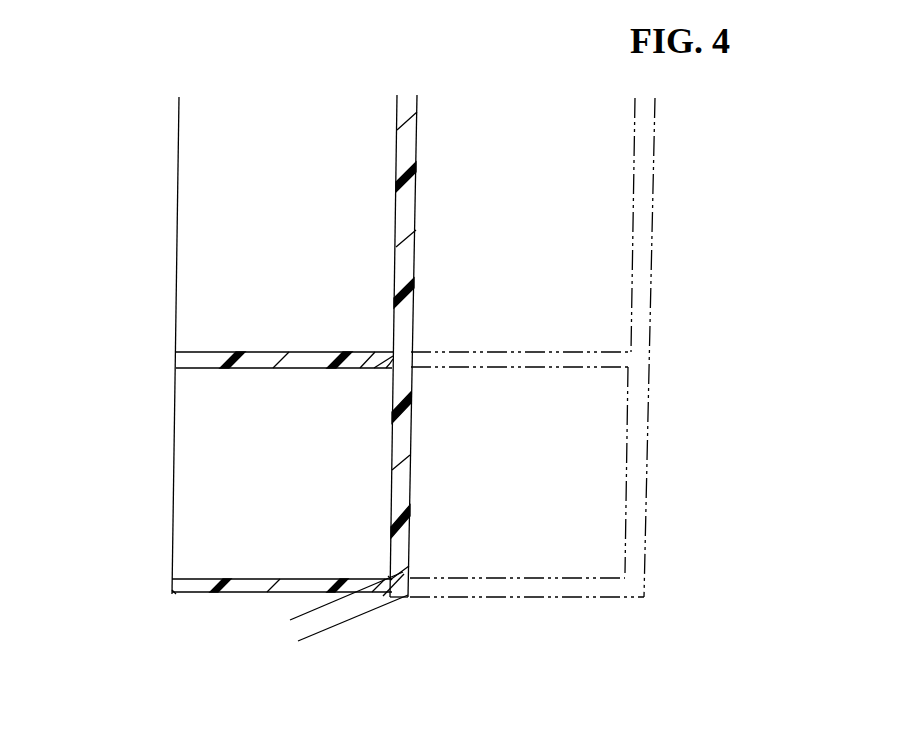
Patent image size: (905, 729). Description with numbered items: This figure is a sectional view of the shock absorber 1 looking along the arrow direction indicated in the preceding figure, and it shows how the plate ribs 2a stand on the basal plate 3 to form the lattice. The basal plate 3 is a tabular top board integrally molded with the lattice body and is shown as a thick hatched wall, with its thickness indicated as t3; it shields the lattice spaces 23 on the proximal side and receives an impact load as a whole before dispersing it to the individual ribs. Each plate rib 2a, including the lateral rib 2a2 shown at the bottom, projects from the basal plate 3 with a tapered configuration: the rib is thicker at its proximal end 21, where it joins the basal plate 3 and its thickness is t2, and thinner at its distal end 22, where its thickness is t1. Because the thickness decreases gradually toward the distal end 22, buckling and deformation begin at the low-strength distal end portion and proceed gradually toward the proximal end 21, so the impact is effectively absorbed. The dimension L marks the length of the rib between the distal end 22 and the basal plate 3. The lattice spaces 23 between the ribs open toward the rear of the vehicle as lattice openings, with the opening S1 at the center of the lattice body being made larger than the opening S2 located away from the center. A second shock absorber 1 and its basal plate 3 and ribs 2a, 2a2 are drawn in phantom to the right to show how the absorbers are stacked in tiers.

The shock absorber 1 is at (393, 133).
The plate rib 2a is at (237, 370).
The lateral rib 2a2 is at (238, 595).
The basal plate 3 is at (412, 421).
The proximal end 21 is at (388, 574).
The distal end 22 is at (390, 358).
The lattice space 23 is at (361, 345).
The lattice opening S1 is at (212, 186).
The lattice opening S2 is at (192, 471).
The rib length L is at (394, 307).
The thickness of distal end t1 is at (172, 592).
The thickness of proximal end t2 is at (322, 657).
The wall thickness t3 is at (365, 482).